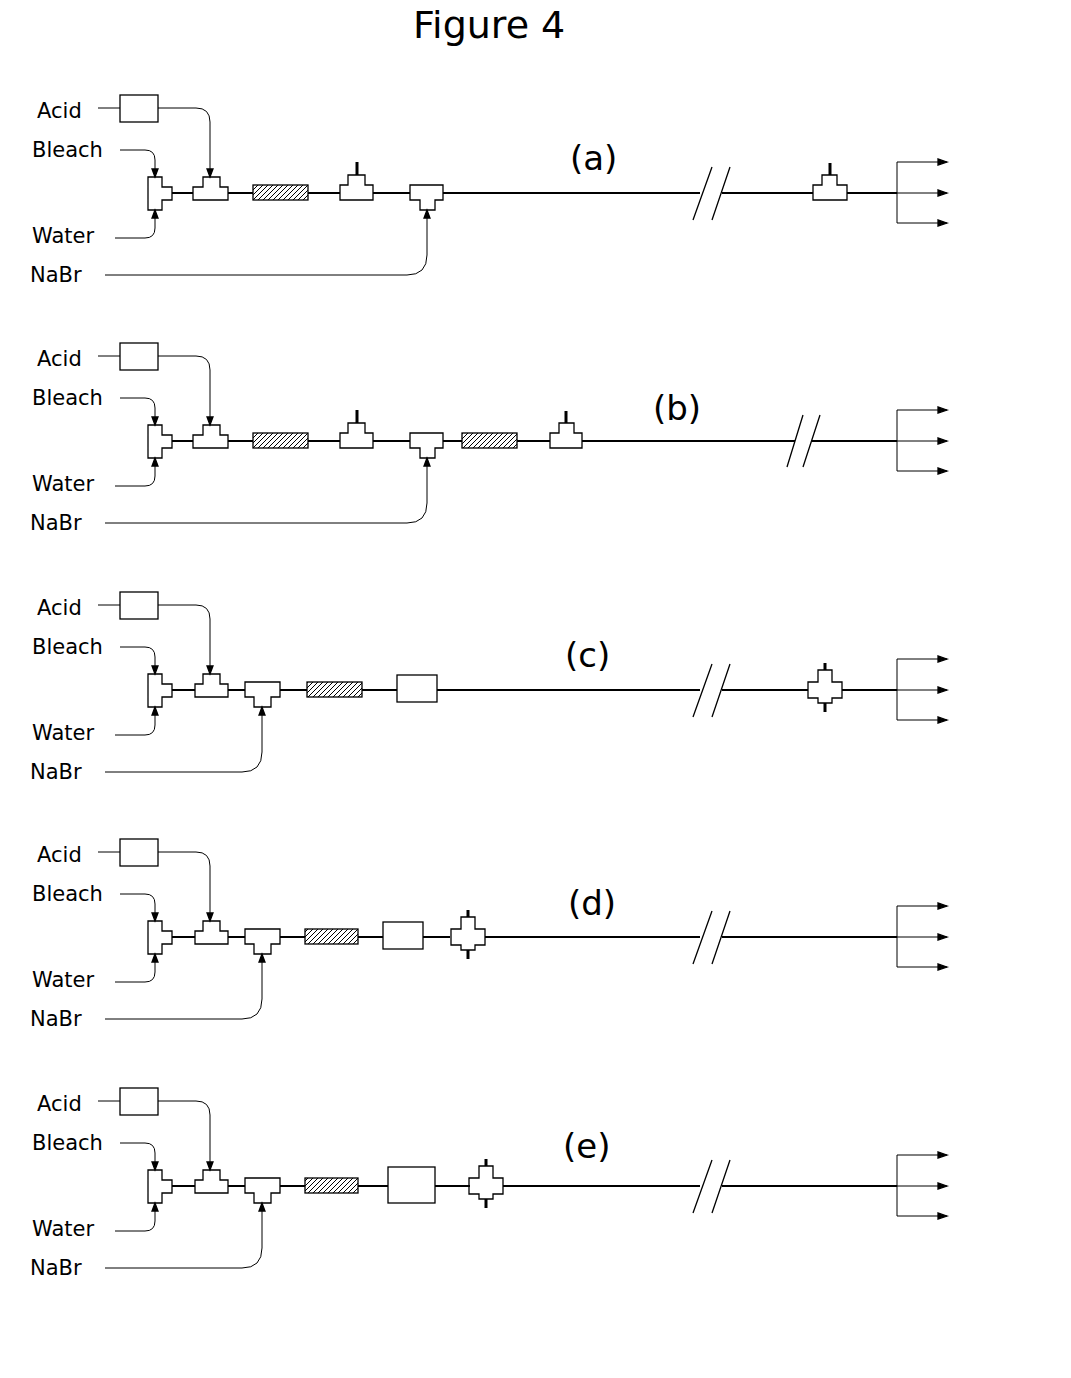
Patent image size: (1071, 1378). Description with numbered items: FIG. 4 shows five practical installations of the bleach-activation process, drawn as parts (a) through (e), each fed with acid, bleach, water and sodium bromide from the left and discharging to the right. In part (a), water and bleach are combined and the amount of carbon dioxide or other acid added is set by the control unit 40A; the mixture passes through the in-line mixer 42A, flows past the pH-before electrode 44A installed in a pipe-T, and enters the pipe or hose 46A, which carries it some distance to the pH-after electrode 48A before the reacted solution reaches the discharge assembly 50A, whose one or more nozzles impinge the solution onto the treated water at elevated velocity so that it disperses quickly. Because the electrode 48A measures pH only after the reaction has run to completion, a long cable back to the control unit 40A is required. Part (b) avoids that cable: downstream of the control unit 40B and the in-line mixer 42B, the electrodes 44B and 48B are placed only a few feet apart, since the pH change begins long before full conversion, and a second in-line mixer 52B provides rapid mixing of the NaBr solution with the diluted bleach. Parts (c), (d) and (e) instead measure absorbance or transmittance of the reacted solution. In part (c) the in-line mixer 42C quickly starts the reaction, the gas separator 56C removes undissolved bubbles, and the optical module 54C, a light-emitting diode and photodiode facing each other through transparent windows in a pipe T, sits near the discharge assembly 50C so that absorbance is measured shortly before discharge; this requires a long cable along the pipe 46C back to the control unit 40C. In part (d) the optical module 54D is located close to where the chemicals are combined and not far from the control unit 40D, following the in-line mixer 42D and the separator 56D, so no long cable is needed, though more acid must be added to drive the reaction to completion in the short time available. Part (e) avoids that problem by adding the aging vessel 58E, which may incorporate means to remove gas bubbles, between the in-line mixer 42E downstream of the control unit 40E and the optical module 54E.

The control unit 40A is at (200, 142).
The in-line mixer 42A is at (280, 179).
The pH-before electrode 44A is at (357, 168).
The pipe or hose 46A is at (571, 211).
The pH-after electrode 48A is at (829, 167).
The discharge assembly 50A is at (922, 178).
The acid mixing tee 40B is at (200, 390).
The static mixer 42B is at (280, 427).
The pH-before electrode 44B is at (357, 415).
The second in-line mixer 52B is at (489, 424).
The pH-after electrode 48B is at (566, 415).
The control unit 40C is at (200, 639).
The in-line mixer 42C is at (334, 672).
The gas separator 56C is at (417, 673).
The pipe 46C is at (568, 708).
The optical module 54C is at (826, 670).
The discharge assembly 50C is at (922, 672).
The control unit 40D is at (200, 886).
The static mixer 42D is at (331, 921).
The reaction chamber 56D is at (406, 921).
The optical module 54D is at (470, 922).
The acid mixing tee 40E is at (200, 1135).
The static mixer 42E is at (331, 1173).
The aging vessel 58E is at (411, 1169).
The optical module 54E is at (487, 1168).